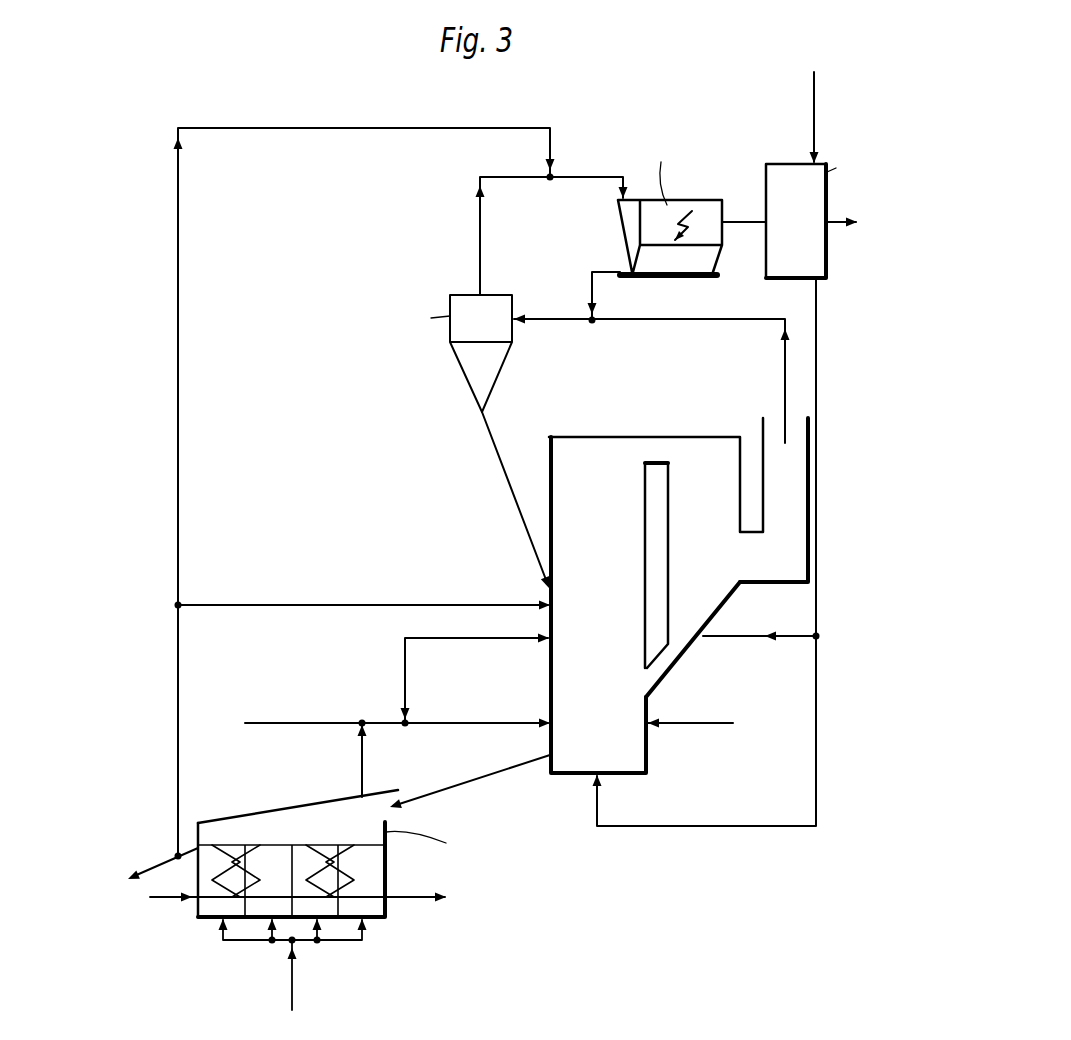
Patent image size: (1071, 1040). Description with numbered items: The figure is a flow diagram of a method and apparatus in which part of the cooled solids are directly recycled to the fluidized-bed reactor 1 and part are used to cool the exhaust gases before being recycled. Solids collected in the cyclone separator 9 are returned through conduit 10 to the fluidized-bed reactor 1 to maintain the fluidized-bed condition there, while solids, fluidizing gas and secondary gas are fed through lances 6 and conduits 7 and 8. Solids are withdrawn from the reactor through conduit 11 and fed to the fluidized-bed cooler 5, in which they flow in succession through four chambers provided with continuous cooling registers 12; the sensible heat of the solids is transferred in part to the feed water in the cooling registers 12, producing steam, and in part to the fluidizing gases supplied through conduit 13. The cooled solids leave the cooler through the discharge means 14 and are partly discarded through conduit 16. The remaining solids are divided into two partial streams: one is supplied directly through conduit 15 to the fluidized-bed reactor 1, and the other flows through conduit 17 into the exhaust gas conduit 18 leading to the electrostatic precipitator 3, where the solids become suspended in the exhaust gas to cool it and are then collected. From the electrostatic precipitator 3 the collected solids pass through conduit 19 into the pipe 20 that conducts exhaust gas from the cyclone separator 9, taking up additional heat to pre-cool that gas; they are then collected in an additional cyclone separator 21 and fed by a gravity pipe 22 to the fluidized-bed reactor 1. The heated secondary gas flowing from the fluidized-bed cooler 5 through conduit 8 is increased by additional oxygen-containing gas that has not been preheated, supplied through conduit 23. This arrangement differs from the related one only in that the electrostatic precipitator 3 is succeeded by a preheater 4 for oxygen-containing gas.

The fluidized-bed reactor 1 is at (556, 663).
The electrostatic precipitator 3 is at (713, 263).
The preheater 4 is at (790, 282).
The fluidized-bed cooler 5 is at (388, 872).
The lances 6 is at (706, 720).
The conduit 7 is at (597, 810).
The conduit 8 is at (462, 720).
The cyclone separator 9 is at (718, 592).
The conduit 10 is at (655, 668).
The conduit 11 is at (490, 774).
The cooling registers 12 is at (165, 905).
The conduit 13 is at (295, 984).
The discharge means 14 is at (196, 845).
The conduit 15 is at (375, 603).
The conduit 16 is at (167, 857).
The conduit 17 is at (180, 336).
The exhaust gas conduit 18 is at (484, 236).
The conduit 19 is at (591, 279).
The pipe 20 is at (647, 322).
The additional cyclone separator 21 is at (493, 387).
The gravity pipe 22 is at (503, 476).
The conduit 23 is at (296, 722).